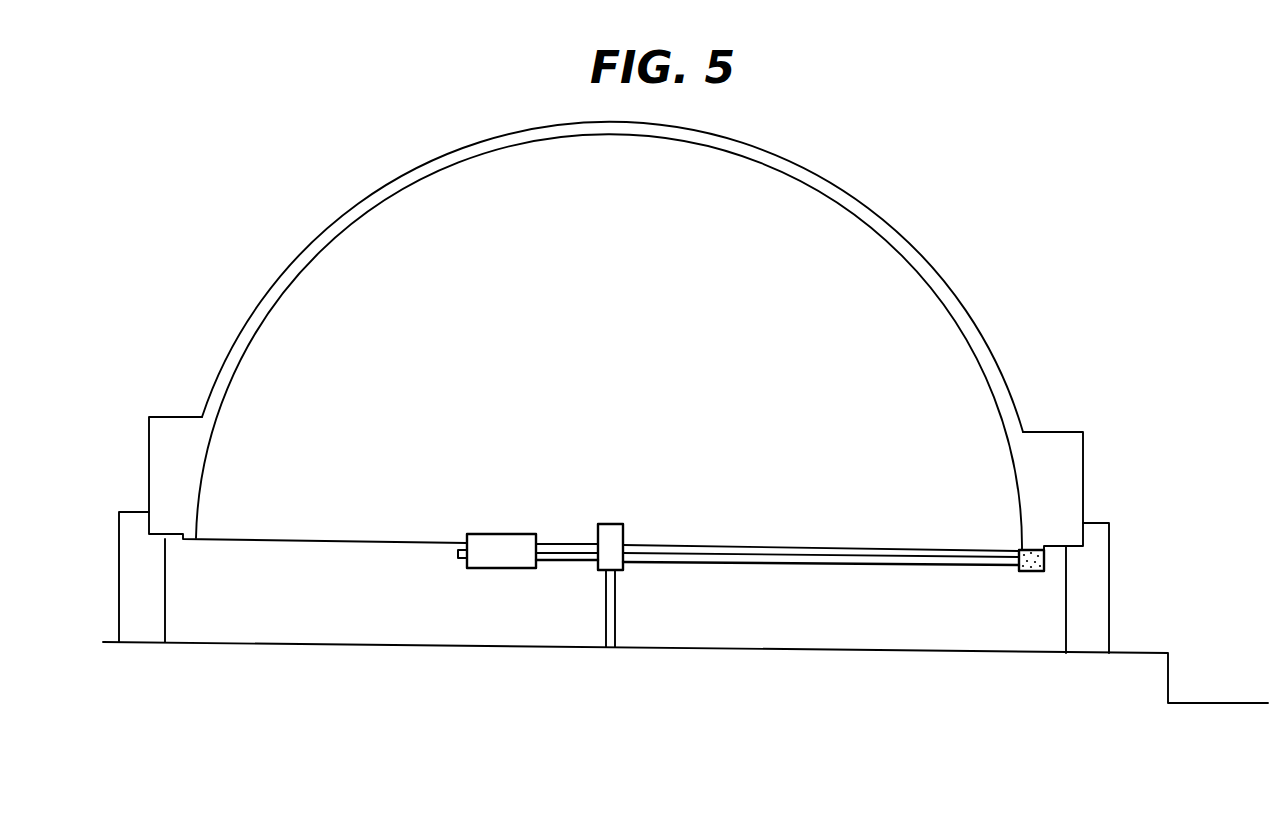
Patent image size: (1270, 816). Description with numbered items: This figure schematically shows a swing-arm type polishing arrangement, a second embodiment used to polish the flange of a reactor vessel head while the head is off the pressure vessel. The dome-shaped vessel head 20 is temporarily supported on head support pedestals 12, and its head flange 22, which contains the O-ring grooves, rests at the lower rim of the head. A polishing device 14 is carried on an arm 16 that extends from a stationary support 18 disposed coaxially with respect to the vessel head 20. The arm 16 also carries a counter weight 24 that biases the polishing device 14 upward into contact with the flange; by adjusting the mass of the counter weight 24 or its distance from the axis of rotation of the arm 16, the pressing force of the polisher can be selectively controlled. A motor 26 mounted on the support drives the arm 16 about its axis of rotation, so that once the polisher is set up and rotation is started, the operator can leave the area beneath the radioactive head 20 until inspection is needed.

The head support pedestals 12 is at (147, 623).
The polishing device 14 is at (1020, 567).
The arm 16 is at (687, 560).
The stationary support 18 is at (610, 618).
The vessel head 20 is at (180, 470).
The head flange 22 is at (190, 540).
The counter weight 24 is at (498, 548).
The motor 26 is at (610, 535).